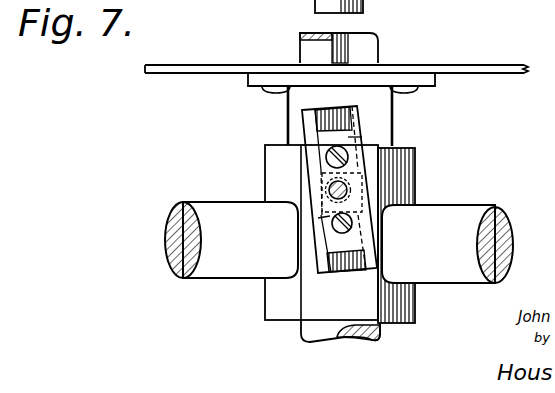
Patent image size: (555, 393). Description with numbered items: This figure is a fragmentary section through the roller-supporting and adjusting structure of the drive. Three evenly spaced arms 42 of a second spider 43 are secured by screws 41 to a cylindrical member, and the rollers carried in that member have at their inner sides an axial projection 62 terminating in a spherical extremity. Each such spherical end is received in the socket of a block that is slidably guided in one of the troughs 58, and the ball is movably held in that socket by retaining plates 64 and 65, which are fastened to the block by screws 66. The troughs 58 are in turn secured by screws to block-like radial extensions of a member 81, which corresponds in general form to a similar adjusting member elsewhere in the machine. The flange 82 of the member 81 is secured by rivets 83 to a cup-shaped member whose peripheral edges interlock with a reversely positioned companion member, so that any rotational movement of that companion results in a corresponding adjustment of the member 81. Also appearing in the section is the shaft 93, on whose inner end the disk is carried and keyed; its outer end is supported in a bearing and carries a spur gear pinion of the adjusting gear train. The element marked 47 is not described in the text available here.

The screws 41 is at (363, 10).
The shaft 93 is at (372, 46).
The flange 82 is at (248, 80).
The rivets 83 is at (268, 92).
The member 81 is at (288, 133).
The second spider 43 is at (272, 308).
The troughs 58 is at (358, 113).
The screws 66 is at (334, 192).
The axial projection 62 is at (327, 189).
The retaining plate 64 is at (362, 137).
The retaining plate 65 is at (323, 221).
The arms 42 is at (207, 204).
The right roller 47 is at (463, 209).